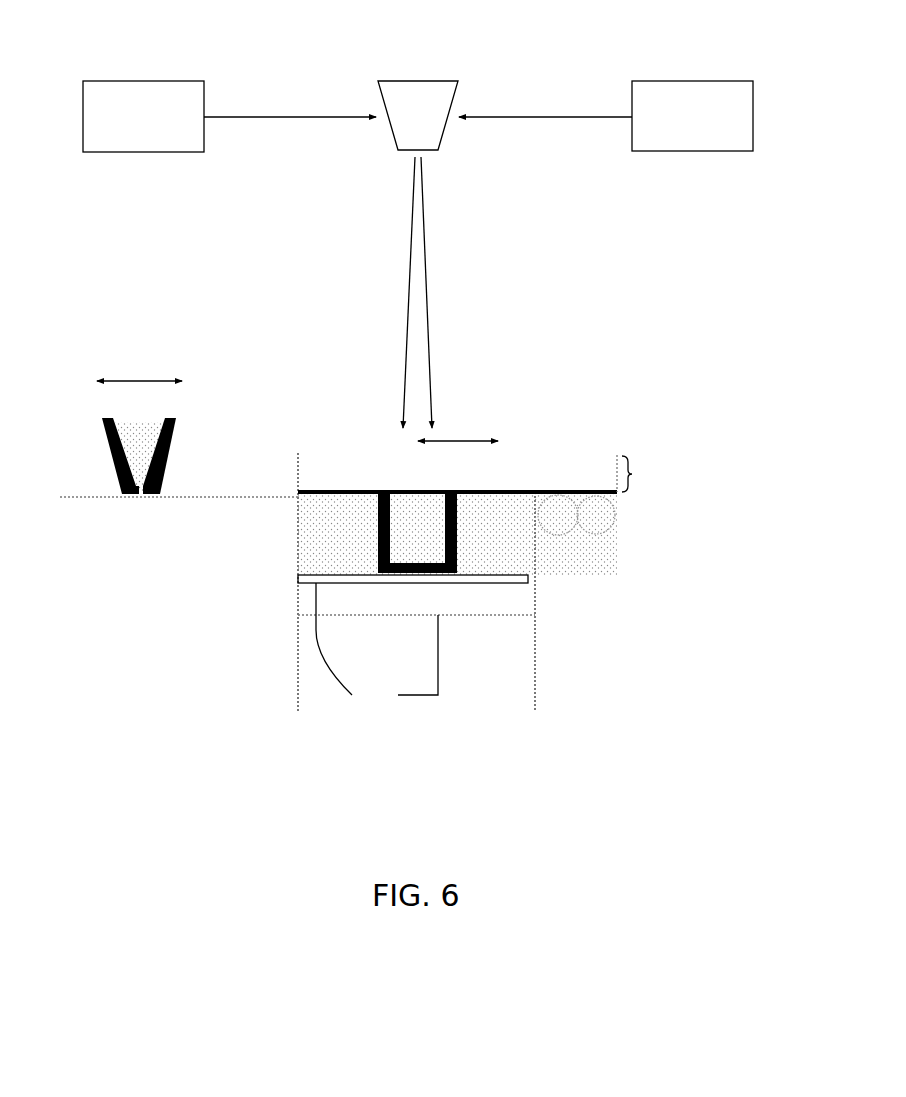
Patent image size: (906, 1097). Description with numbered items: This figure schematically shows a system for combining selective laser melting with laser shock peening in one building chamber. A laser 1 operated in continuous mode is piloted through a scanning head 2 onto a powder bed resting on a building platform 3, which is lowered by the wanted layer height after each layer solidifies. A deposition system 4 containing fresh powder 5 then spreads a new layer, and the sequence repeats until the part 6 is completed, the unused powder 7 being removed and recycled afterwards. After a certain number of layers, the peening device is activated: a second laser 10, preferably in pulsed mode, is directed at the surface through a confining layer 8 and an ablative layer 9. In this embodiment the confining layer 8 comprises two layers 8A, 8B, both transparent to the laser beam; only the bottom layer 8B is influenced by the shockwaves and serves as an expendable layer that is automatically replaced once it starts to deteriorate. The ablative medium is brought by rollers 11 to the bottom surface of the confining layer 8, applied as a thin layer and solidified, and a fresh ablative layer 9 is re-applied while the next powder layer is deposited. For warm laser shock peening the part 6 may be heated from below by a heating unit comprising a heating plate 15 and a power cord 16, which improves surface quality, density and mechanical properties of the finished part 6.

The laser 1 is at (157, 100).
The scanning head 2 is at (417, 105).
The building platform 3 is at (518, 594).
The deposition system 4 is at (178, 420).
The fresh powder 5 is at (147, 470).
The part 6 is at (453, 537).
The unused powder 7 is at (515, 525).
The confining layer 8 is at (634, 470).
The top layer of confining layer 8A is at (497, 465).
The expendable bottom layer of confining layer 8B is at (585, 490).
The ablative layer 9 is at (530, 490).
The second laser 10 is at (687, 110).
The rollers 11 is at (605, 513).
The heating plate 15 is at (305, 578).
The power cord 16 is at (315, 630).